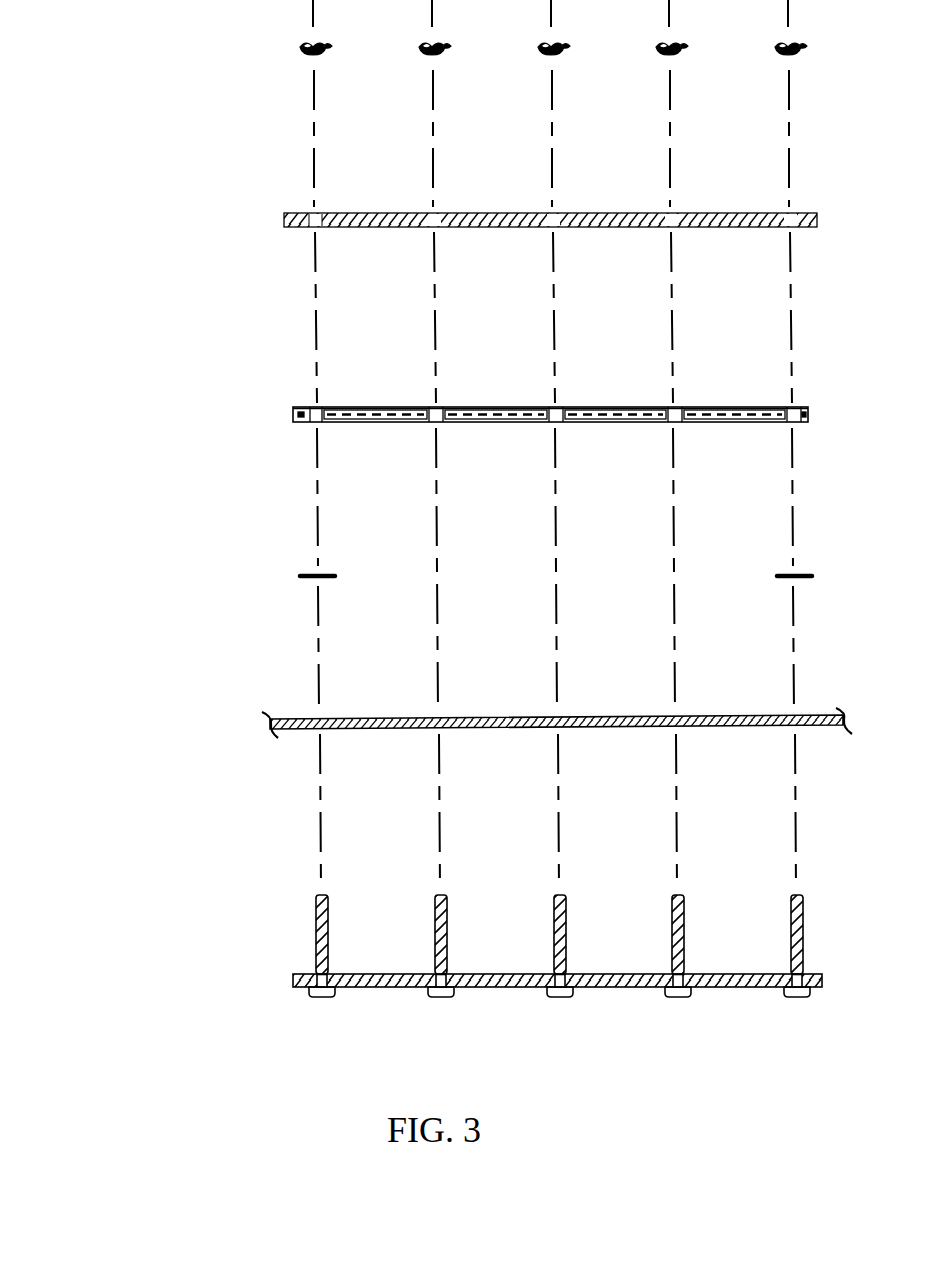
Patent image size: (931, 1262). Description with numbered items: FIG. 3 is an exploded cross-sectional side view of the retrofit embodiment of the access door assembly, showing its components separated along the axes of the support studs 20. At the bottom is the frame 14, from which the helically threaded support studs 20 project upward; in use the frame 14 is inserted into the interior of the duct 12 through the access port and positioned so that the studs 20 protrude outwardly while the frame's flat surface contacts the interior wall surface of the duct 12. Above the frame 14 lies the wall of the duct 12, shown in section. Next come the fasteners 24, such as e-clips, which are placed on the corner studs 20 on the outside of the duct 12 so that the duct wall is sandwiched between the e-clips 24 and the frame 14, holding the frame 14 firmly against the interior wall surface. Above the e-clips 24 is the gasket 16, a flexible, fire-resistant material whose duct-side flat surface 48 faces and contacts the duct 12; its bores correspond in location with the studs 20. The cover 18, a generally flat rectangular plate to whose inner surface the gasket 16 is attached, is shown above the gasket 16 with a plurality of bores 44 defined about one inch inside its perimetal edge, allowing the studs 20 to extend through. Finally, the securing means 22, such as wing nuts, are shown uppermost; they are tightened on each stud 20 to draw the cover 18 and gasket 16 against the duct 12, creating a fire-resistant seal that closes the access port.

The duct 12 is at (258, 724).
The frame 14 is at (283, 981).
The gasket 16 is at (286, 414).
The cover 18 is at (275, 219).
The support studs 20 is at (306, 922).
The securing means 22 is at (283, 47).
The fasteners 24 is at (290, 576).
The bores 44 is at (312, 210).
The duct-side flat surface 48 is at (355, 405).